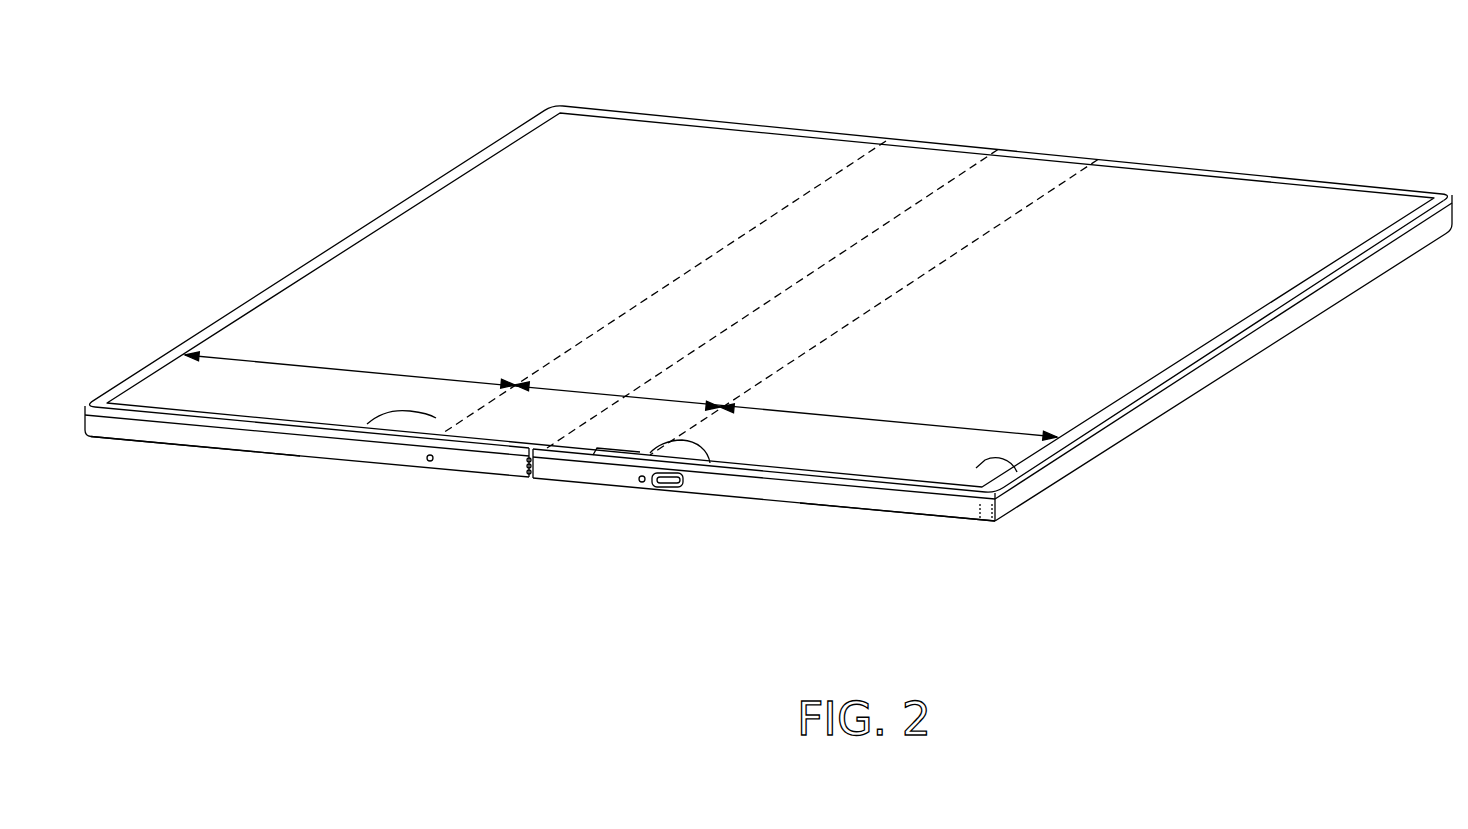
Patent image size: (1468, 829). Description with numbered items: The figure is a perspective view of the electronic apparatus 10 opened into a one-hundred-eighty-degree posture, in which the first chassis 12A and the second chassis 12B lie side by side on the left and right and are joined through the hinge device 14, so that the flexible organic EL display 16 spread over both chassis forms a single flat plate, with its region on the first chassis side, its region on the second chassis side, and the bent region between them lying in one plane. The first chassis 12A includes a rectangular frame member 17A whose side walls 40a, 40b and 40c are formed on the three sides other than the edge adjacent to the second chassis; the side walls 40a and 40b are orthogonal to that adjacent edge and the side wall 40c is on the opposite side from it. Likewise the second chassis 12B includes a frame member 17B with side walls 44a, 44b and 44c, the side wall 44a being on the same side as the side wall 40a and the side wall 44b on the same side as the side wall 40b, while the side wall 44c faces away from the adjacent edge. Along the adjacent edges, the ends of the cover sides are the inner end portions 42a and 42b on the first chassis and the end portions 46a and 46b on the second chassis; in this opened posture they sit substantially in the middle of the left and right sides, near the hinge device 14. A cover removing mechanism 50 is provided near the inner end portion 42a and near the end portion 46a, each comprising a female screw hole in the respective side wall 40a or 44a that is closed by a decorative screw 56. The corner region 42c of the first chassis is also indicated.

The electronic apparatus 10 is at (1431, 92).
The first chassis 12A is at (992, 355).
The second chassis 12B is at (541, 311).
The hinge device 14 is at (957, 180).
The display 16 is at (770, 283).
The frame member 17A is at (942, 513).
The frame member 17B is at (195, 467).
The side wall 40a is at (883, 518).
The side wall 40b is at (1295, 176).
The side wall 40c is at (1098, 440).
The inner end portion 42a is at (710, 463).
The inner end portion 42b is at (1118, 183).
The corner portion of first housing 42c is at (1017, 472).
The side wall 44a is at (307, 447).
The side wall 44b is at (697, 121).
The side wall 44c is at (376, 218).
The end portion 46a is at (367, 424).
The end portion 46b is at (850, 155).
The cover removing mechanism 50 is at (548, 526).
The decorative screw 56 is at (426, 458).